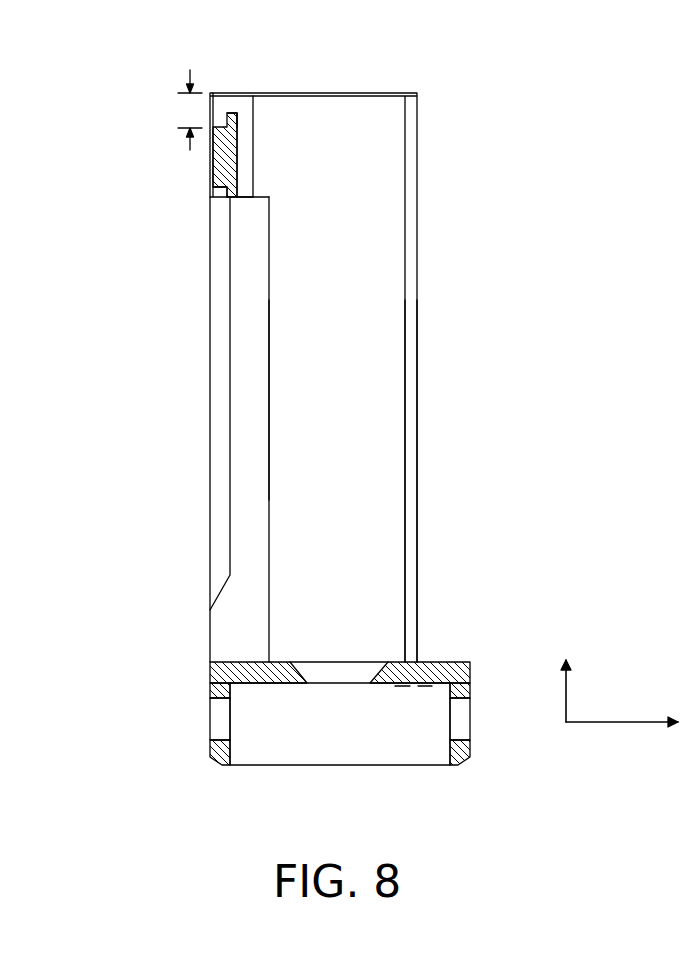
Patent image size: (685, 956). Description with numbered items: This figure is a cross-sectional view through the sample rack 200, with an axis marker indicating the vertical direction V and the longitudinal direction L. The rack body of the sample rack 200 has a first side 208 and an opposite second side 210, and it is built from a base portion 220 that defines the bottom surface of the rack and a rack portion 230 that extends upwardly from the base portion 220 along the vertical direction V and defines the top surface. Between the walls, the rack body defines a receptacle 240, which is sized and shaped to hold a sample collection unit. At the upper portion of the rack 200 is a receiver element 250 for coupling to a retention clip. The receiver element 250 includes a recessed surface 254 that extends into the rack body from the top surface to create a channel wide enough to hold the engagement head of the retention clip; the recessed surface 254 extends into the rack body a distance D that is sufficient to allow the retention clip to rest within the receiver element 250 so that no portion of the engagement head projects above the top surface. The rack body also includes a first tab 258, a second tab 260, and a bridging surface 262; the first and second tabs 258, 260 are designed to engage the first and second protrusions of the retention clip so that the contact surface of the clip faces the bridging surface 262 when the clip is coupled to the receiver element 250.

The sample rack 200 is at (443, 82).
The first side 208 is at (210, 268).
The second side 210 is at (426, 460).
The base portion 220 is at (192, 758).
The rack portion 230 is at (192, 415).
The receptacle 240 is at (358, 365).
The receiver element 250 is at (256, 122).
The recessed surface 254 is at (219, 120).
The first tab 258 is at (233, 117).
The second tab 260 is at (230, 190).
The bridging surface 262 is at (237, 153).
The distance D is at (192, 113).
The vertical direction V is at (566, 703).
The longitudinal direction L is at (608, 722).